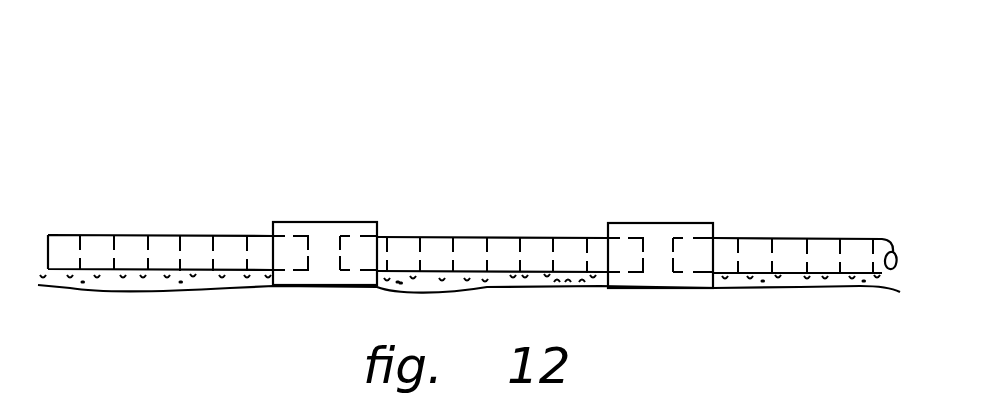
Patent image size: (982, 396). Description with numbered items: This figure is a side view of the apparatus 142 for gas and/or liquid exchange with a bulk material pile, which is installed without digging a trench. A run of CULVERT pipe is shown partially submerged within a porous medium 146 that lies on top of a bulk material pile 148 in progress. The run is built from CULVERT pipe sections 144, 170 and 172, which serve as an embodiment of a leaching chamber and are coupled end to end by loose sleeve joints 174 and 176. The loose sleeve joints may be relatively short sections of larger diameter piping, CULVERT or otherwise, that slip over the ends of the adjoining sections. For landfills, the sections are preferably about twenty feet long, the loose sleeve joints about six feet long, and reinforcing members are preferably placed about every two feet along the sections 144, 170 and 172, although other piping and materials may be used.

The apparatus 142 is at (214, 156).
The CULVERT pipe 144 is at (91, 233).
The porous medium 146 is at (807, 273).
The bulk material pile 148 is at (750, 331).
The CULVERT pipe section 170 is at (530, 237).
The CULVERT pipe section 172 is at (795, 239).
The loose sleeve joint 174 is at (333, 222).
The loose sleeve joint 176 is at (655, 223).